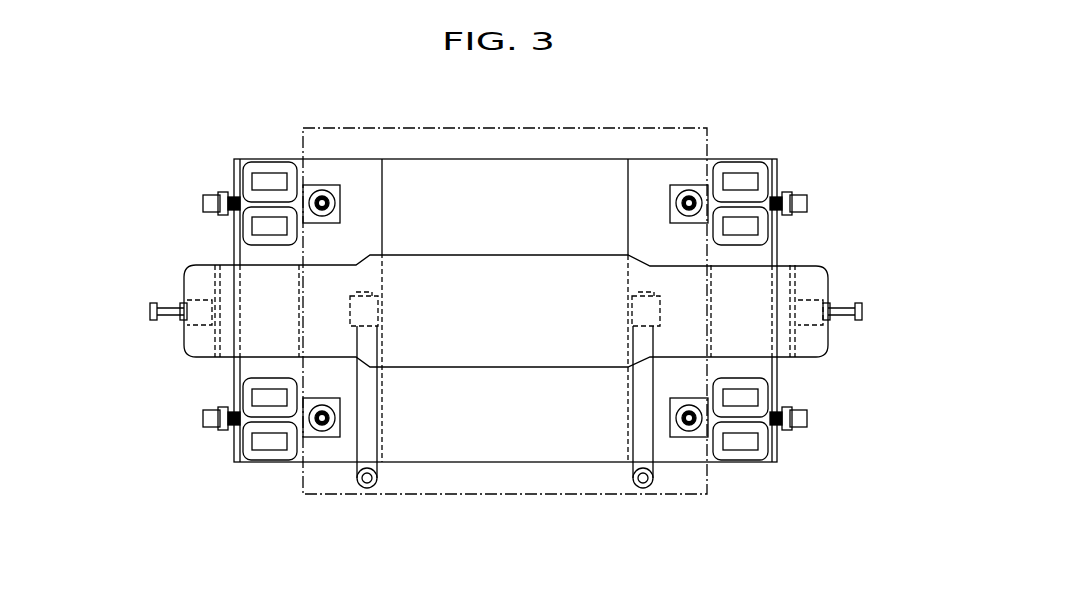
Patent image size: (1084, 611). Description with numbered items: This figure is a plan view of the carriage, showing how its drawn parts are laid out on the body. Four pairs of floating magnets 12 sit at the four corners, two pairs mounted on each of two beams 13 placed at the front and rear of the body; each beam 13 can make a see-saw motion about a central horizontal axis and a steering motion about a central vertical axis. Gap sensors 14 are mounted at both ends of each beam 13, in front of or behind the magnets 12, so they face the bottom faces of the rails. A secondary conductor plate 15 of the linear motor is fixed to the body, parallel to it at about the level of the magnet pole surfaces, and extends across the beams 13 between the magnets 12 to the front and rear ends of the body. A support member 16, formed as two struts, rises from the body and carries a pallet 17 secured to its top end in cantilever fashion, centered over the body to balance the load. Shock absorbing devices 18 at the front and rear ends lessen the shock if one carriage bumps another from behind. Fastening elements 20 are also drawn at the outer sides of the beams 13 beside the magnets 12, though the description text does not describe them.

The floating magnets 12 is at (260, 166).
The beams 13 is at (252, 366).
The gap sensors 14 is at (322, 195).
The secondary conductor plate 15 is at (822, 276).
The support member 16 is at (376, 468).
The pallet 17 is at (447, 128).
The shock absorbing devices 18 is at (150, 312).
The adjusting bolts 20 is at (205, 200).